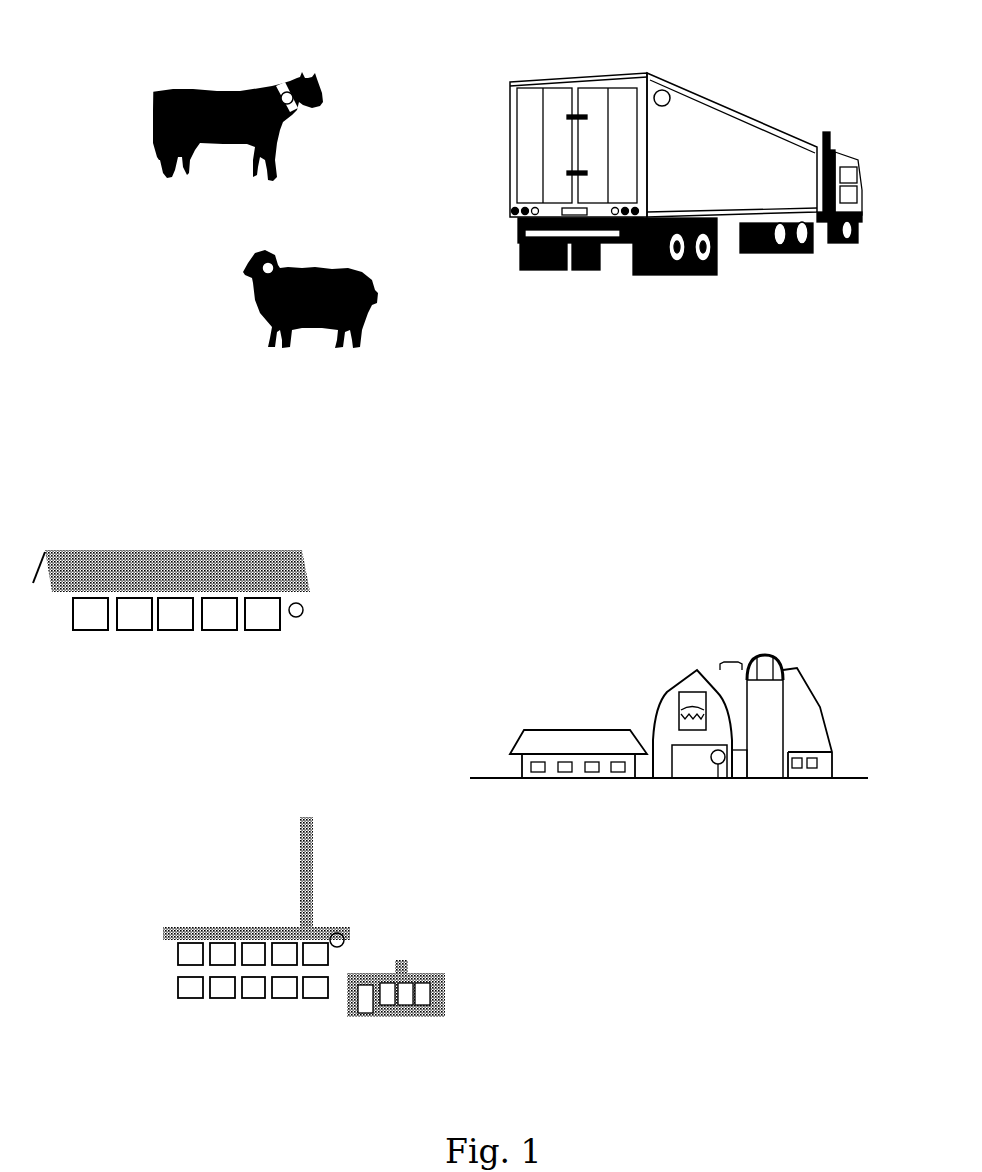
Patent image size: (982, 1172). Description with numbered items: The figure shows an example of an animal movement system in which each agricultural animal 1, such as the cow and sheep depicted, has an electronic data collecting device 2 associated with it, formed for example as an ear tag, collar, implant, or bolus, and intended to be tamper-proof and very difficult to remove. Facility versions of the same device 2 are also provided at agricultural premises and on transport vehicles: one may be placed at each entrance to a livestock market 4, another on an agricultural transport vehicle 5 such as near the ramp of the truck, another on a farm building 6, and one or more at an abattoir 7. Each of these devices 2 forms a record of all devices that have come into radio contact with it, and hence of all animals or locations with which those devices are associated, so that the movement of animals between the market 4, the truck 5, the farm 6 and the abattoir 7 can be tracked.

The agricultural animal 1 is at (152, 127).
The electronic data collecting device 2 is at (280, 80).
The livestock market 4 is at (180, 663).
The agricultural transport vehicle 5 is at (712, 267).
The farm building 6 is at (647, 780).
The abattoir 7 is at (302, 1020).